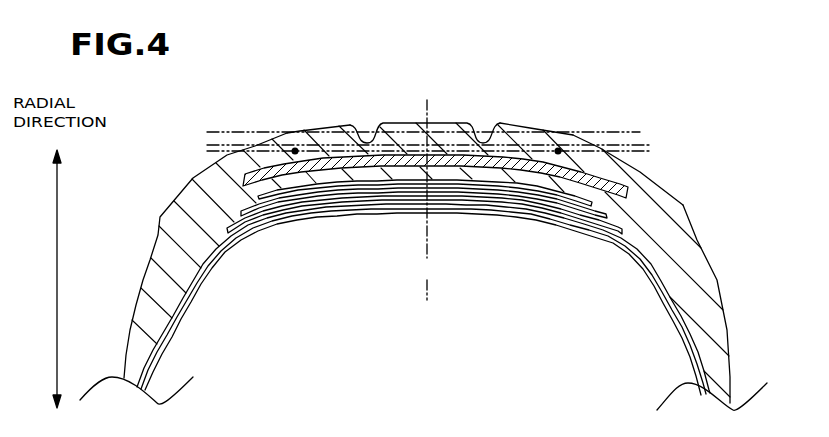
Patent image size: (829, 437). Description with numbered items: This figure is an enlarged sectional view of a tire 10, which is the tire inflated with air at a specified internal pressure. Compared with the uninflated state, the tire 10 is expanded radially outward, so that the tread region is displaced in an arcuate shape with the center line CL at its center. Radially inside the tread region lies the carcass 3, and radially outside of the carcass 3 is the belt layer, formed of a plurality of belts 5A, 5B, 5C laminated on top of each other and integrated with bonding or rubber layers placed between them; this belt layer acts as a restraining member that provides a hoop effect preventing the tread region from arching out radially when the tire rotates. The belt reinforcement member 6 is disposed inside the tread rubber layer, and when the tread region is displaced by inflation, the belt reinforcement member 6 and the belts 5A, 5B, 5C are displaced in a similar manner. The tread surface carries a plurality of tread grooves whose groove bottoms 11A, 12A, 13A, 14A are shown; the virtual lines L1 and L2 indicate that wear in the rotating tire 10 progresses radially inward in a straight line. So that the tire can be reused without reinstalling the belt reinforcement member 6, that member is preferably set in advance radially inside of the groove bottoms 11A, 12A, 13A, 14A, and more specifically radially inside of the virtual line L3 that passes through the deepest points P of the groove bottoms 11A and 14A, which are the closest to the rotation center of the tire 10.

The tire 10 is at (116, 203).
The carcass 3 is at (154, 337).
The belt 5A is at (350, 186).
The belt 5B is at (373, 192).
The belt 5C is at (407, 202).
The belt reinforcement member 6 is at (527, 158).
The groove bottom 11A is at (295, 149).
The groove bottom 12A is at (369, 142).
The groove bottom 13A is at (484, 141).
The groove bottom 14A is at (558, 150).
The deepest point P is at (295, 152).
The center line CL is at (428, 200).
The virtual line L1 is at (640, 132).
The virtual line L2 is at (650, 145).
The virtual line L3 is at (207, 151).